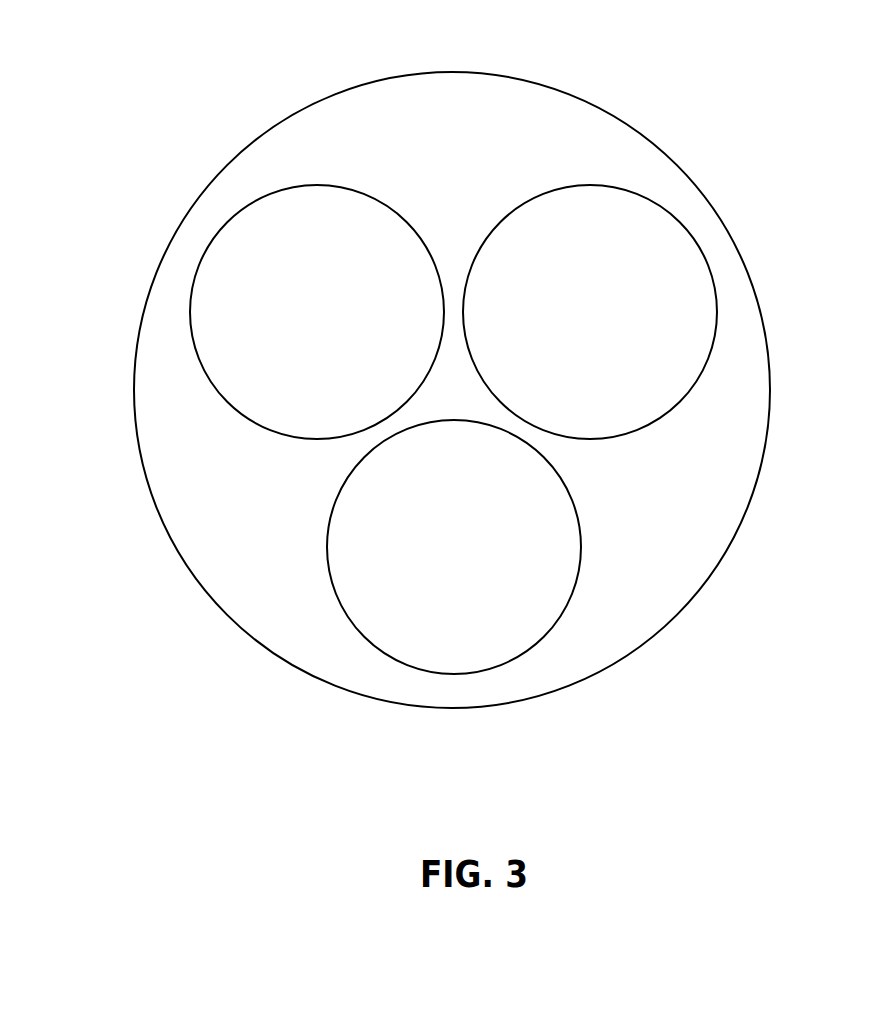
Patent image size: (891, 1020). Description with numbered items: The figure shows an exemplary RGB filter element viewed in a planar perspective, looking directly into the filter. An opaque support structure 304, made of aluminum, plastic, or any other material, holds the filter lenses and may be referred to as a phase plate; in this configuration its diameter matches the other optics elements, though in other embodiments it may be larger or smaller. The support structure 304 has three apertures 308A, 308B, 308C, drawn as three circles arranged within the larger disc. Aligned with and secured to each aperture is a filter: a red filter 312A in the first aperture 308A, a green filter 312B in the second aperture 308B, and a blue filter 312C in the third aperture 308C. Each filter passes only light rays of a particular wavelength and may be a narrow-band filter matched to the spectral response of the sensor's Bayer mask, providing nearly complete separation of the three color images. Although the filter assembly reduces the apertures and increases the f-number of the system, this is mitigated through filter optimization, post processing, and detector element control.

The support structure 304 is at (588, 100).
The aperture 308A is at (227, 223).
The red filter 312A is at (243, 282).
The aperture 308B is at (680, 223).
The green filter 312B is at (662, 282).
The aperture 308C is at (542, 640).
The blue filter 312C is at (479, 642).